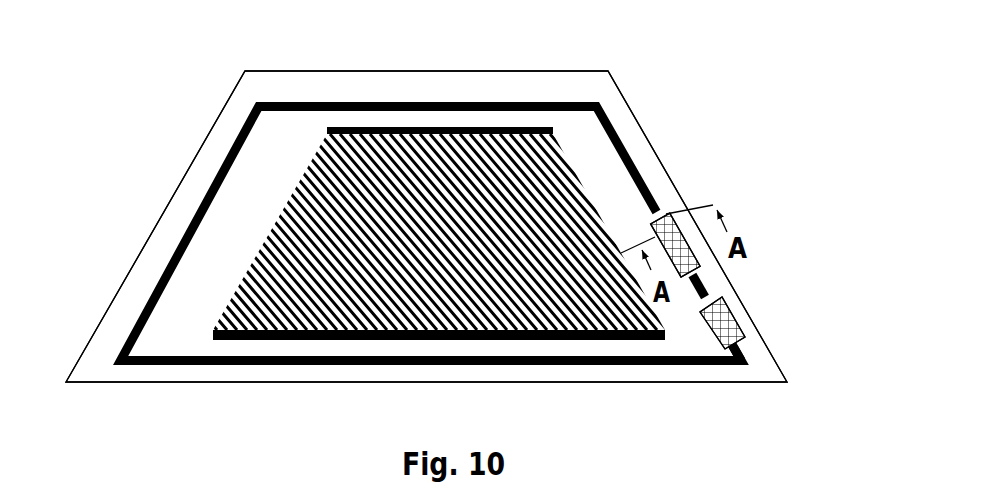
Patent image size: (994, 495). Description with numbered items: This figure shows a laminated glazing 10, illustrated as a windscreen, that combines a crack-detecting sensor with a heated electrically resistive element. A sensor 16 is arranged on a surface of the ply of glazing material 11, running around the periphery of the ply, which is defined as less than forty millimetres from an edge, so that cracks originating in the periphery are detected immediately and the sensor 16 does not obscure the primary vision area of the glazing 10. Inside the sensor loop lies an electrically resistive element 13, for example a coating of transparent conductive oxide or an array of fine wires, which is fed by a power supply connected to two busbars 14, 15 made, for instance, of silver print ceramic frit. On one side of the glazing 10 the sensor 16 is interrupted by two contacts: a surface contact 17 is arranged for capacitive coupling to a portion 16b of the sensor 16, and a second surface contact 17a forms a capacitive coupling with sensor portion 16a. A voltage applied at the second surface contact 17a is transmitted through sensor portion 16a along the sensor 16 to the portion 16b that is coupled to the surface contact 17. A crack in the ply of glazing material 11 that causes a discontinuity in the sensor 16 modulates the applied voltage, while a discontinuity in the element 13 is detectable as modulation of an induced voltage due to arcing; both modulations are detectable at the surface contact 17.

The glazing 10 is at (663, 97).
The ply of glazing material 11 is at (653, 147).
The electrically resistive element 13 is at (256, 249).
The busbar 14 is at (327, 130).
The busbar 15 is at (213, 329).
The sensor 16 is at (650, 187).
The sensor portion 16a is at (742, 347).
The portion of the sensor 16b is at (710, 287).
The surface contact 17 is at (675, 212).
The second surface contact 17a is at (733, 318).